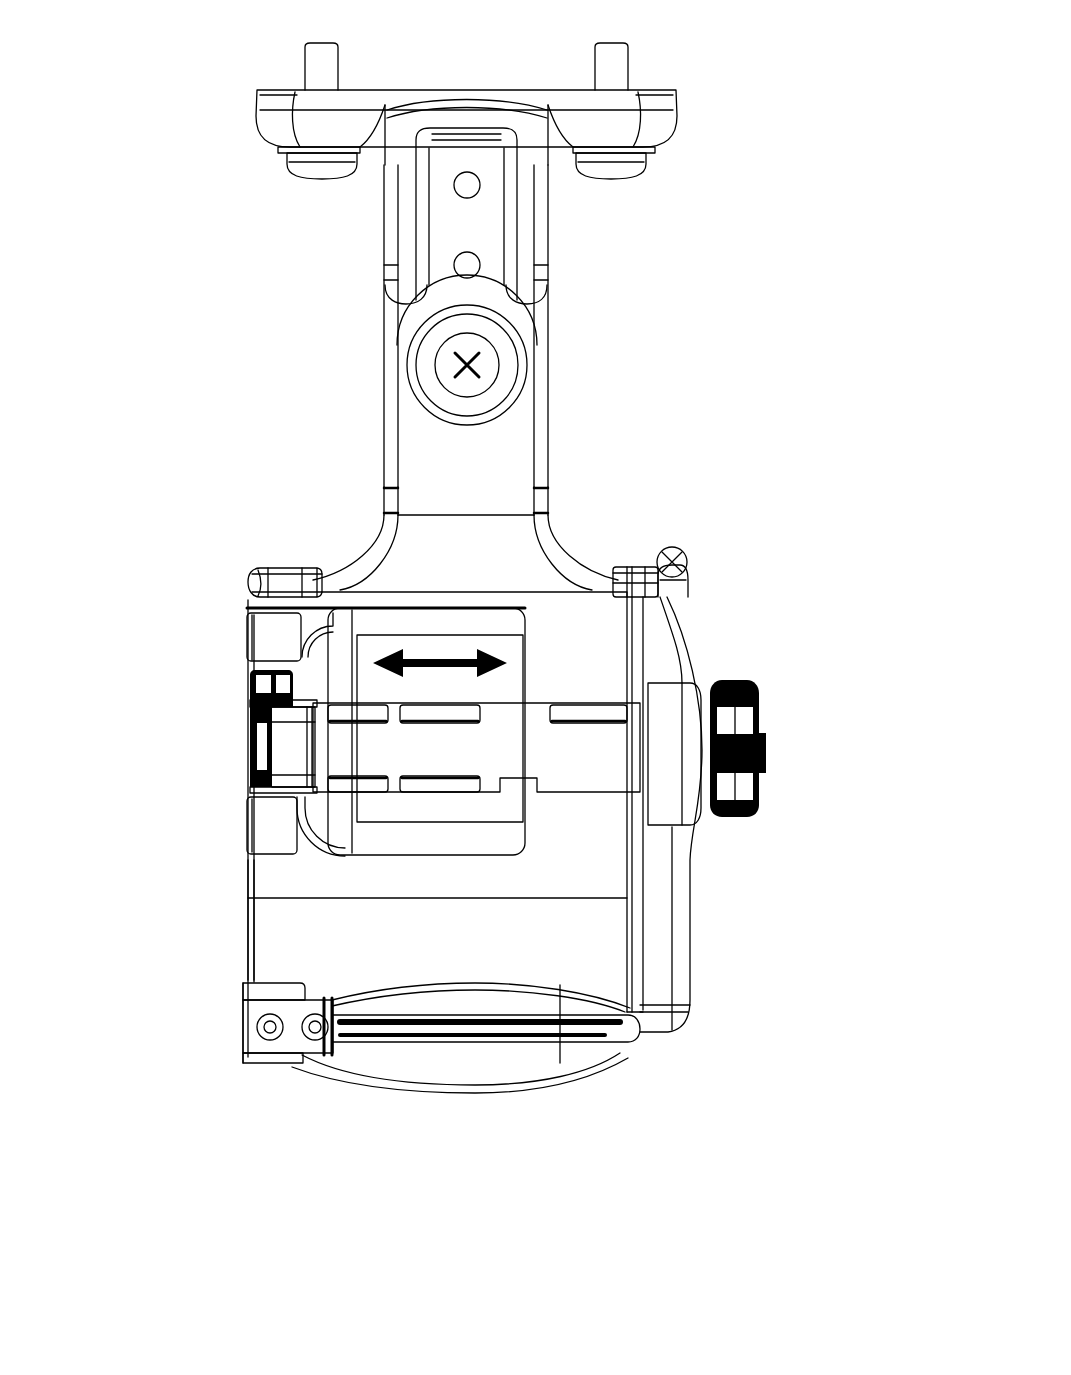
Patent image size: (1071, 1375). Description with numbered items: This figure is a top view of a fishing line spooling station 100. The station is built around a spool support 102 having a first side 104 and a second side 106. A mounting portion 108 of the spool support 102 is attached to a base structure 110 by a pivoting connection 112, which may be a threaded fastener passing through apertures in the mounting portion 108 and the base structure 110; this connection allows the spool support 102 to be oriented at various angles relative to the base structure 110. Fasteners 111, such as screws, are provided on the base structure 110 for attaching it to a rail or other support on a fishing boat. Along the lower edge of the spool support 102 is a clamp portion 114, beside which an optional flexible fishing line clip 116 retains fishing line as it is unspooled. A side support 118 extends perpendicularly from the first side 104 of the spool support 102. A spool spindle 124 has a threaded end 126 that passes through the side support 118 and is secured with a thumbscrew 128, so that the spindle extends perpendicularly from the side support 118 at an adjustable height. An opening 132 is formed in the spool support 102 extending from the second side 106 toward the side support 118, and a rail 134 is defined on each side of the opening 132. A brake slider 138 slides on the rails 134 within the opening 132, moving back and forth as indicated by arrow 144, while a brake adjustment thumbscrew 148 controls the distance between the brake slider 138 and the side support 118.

The fishing line spooling station 100 is at (148, 108).
The spool support 102 is at (318, 942).
The first side 104 is at (627, 940).
The second side 106 is at (245, 921).
The mounting portion 108 is at (545, 435).
The base structure 110 is at (548, 215).
The fasteners 111 is at (338, 70).
The pivoting connection 112 is at (485, 367).
The bottom clamp 114 is at (453, 1095).
The flexible fishing line clip 116 is at (595, 1050).
The side support 118 is at (693, 843).
The spool spindle 124 is at (533, 705).
The threaded end 126 is at (765, 748).
The thumbscrew 128 is at (757, 688).
The opening 132 is at (377, 677).
The rail 134 is at (380, 626).
The brake slider 138 is at (313, 633).
The arrow 144 is at (445, 660).
The brake adjustment thumbscrew 148 is at (252, 706).